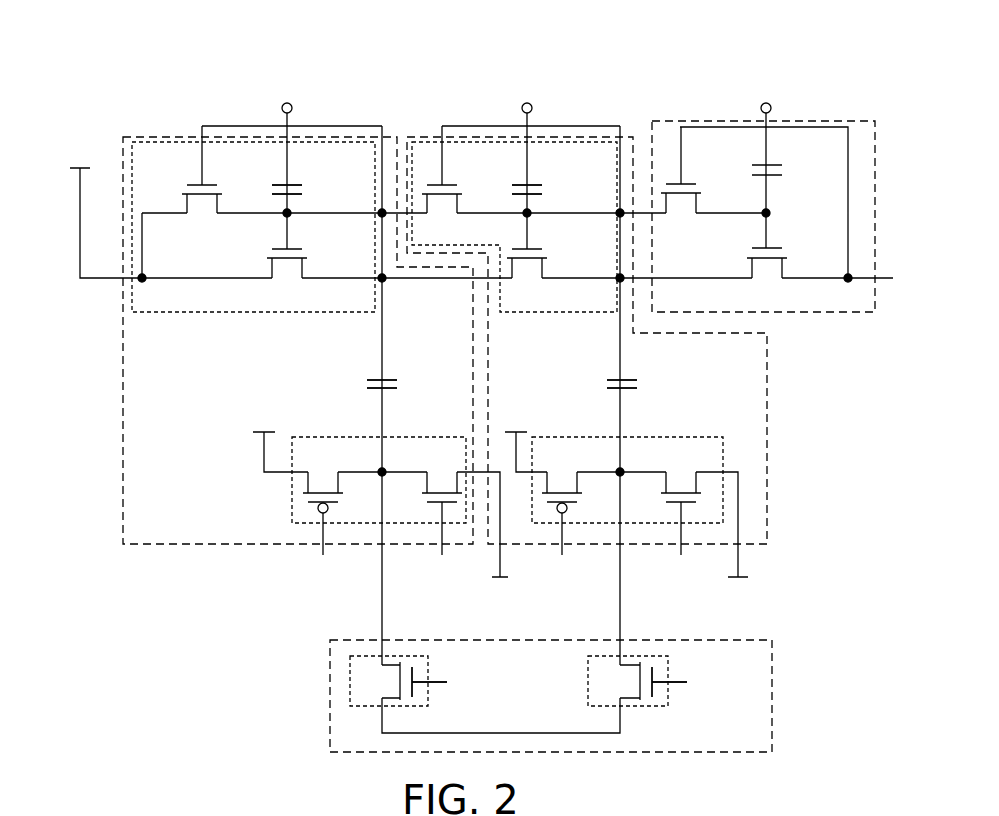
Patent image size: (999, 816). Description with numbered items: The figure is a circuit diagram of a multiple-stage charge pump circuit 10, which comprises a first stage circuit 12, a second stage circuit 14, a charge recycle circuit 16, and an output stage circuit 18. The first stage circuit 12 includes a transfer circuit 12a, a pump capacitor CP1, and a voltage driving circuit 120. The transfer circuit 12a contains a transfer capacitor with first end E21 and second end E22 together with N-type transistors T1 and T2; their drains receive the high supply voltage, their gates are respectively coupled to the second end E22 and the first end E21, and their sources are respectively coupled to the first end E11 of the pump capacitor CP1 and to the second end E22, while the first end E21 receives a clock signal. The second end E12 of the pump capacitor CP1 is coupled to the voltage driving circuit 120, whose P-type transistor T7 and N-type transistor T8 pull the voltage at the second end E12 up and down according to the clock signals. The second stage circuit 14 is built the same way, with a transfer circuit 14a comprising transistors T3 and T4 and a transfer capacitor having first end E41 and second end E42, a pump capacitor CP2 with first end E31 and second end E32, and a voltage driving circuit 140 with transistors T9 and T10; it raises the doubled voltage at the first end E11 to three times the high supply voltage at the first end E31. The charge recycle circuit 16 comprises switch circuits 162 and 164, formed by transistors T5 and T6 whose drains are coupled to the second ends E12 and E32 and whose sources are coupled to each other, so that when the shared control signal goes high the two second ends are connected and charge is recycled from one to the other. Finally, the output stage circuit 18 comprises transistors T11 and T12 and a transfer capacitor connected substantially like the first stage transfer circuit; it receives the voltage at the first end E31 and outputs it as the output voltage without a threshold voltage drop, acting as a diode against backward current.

The multiple-stage charge pump circuit 10 is at (522, 398).
The first stage circuit 12 is at (297, 337).
The transfer circuit 12a is at (226, 187).
The second stage circuit 14 is at (576, 337).
The transfer circuit 14a is at (501, 188).
The charge recycle circuit 16 is at (593, 696).
The output stage circuit 18 is at (791, 191).
The voltage driving circuit 120 is at (384, 488).
The voltage driving circuit 140 is at (631, 488).
The switch circuit 162 is at (441, 688).
The switch circuit 164 is at (680, 688).
The first transistor T1 is at (288, 280).
The second transistor T2 is at (204, 184).
The transistor T3 is at (444, 184).
The transistor T4 is at (528, 280).
The transistor T5 is at (404, 681).
The transistor T6 is at (644, 681).
The transistor T7 is at (323, 496).
The transistor T8 is at (442, 496).
The transistor T9 is at (562, 496).
The transistor T10 is at (688, 496).
The transistor T11 is at (775, 280).
The transistor T12 is at (687, 186).
The pump capacitor CP1 is at (412, 385).
The pump capacitor CP2 is at (652, 385).
The first end E11 is at (390, 378).
The second end E12 is at (390, 390).
The first end E21 is at (293, 183).
The second end E22 is at (293, 196).
The first end E31 is at (630, 378).
The second end E32 is at (630, 390).
The first end E41 is at (533, 183).
The second end E42 is at (533, 196).